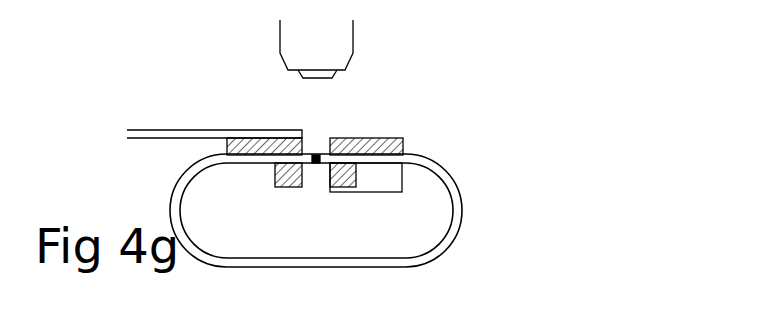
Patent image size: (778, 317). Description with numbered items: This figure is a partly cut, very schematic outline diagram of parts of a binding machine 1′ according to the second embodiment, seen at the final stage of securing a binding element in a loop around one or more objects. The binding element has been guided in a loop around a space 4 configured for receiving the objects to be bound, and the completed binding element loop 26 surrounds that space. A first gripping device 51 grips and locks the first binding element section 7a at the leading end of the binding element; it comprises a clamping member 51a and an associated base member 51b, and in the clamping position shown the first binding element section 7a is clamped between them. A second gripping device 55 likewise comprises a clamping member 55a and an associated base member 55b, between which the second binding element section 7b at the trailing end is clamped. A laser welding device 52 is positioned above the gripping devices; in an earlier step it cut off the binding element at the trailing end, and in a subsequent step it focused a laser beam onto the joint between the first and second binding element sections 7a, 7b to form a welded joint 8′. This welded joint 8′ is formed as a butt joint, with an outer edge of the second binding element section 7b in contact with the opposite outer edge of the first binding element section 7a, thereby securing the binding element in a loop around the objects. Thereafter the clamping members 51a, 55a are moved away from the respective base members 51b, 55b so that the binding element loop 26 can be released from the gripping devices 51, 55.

The binding machine 1′ is at (220, 53).
The space 4 is at (237, 242).
The first binding element section 7a is at (288, 160).
The second binding element section 7b is at (342, 157).
The welded joint 8' is at (323, 193).
The binding element loop 26 is at (458, 210).
The first gripping device 51 is at (260, 173).
The clamping member 51a is at (284, 185).
The base member 51b is at (245, 143).
The laser welding device 52 is at (360, 33).
The second gripping device 55 is at (405, 198).
The clamping member 55a is at (343, 180).
The base member 55b is at (380, 143).